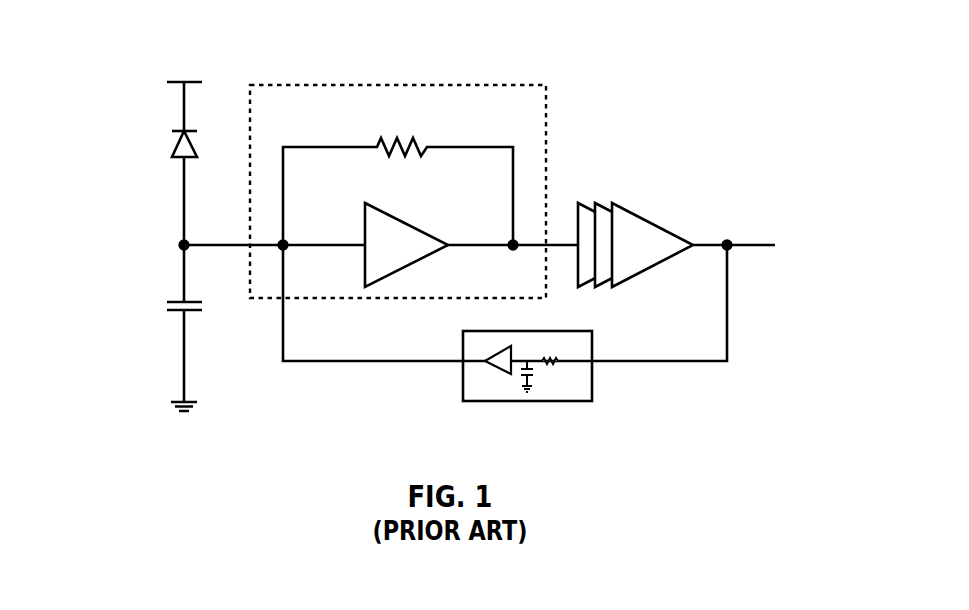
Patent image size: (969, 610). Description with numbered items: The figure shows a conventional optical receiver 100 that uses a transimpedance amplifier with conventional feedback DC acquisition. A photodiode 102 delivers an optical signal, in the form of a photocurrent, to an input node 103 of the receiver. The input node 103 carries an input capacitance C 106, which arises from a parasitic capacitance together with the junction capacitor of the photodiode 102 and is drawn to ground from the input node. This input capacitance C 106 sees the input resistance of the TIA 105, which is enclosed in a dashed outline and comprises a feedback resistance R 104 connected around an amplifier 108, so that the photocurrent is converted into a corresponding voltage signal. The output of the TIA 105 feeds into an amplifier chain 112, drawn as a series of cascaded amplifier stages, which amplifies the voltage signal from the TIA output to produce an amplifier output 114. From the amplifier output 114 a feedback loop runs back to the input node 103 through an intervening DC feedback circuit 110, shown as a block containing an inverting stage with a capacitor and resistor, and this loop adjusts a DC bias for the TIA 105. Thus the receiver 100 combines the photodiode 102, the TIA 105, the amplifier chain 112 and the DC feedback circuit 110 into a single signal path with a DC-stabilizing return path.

The optical receiver 100 is at (99, 270).
The photodiode 102 is at (117, 126).
The input node 103 is at (181, 246).
The feedback resistance R 104 is at (398, 175).
The transimpedance amplifier (TIA) 105 is at (250, 85).
The input capacitance C 106 is at (201, 350).
The amplifier 108 is at (406, 245).
The DC feedback circuit 110 is at (527, 385).
The amplifier chain 112 is at (635, 218).
The amplifier output 114 is at (795, 260).